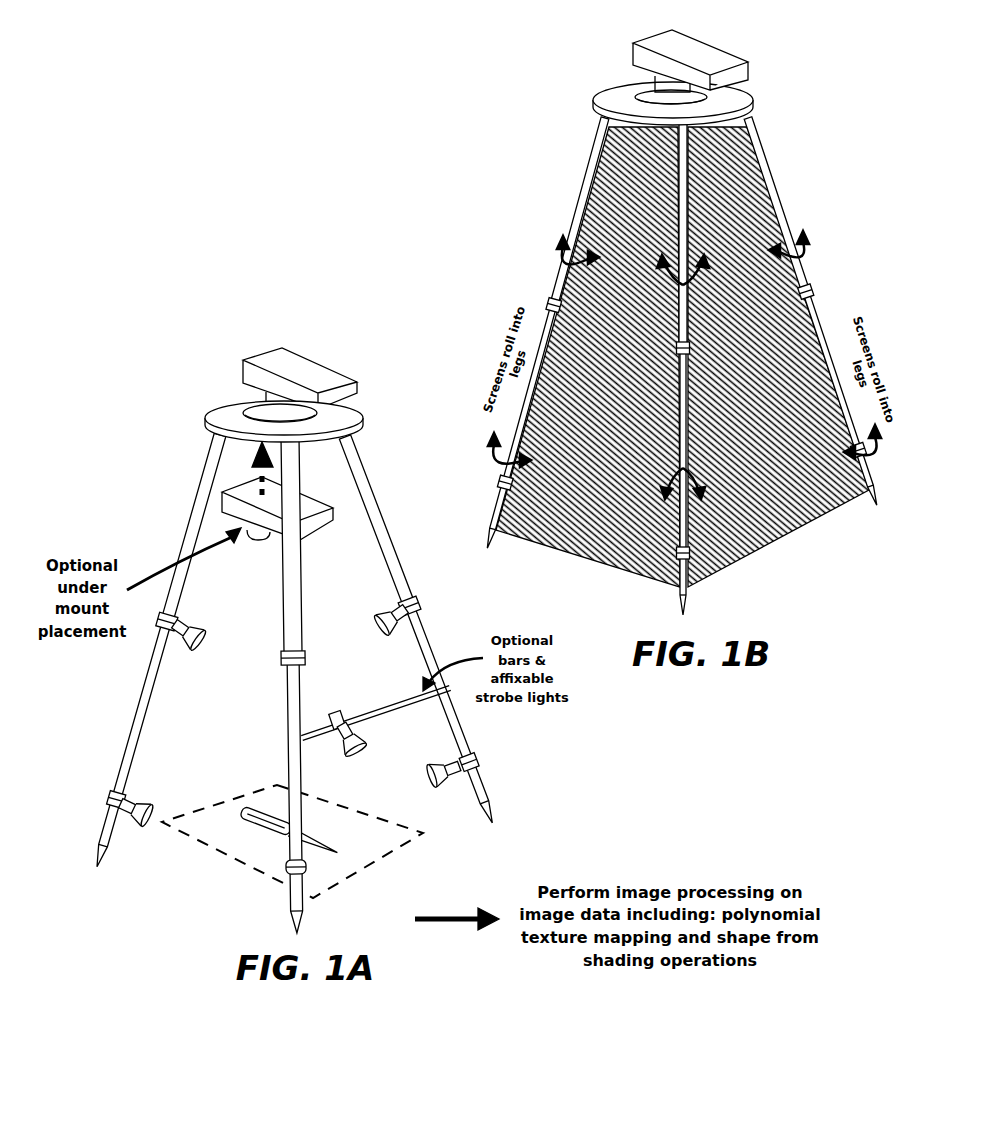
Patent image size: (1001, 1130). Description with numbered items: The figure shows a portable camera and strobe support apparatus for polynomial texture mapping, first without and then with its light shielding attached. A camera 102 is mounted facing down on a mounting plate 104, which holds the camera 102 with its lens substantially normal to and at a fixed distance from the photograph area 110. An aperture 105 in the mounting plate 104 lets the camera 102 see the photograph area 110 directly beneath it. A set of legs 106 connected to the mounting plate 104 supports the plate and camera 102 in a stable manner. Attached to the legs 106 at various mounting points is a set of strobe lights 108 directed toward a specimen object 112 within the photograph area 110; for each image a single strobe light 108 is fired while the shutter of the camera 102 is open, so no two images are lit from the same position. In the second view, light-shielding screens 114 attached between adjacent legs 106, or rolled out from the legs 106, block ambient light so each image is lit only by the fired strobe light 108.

In FIG. 1A, the camera 102 is at (267, 434).
In FIG. 1B, the camera 102 is at (718, 53).
In FIG. 1A, the mounting plate 104 is at (248, 408).
In FIG. 1B, the mounting plate 104 is at (638, 93).
In FIG. 1A, the aperture 105 is at (232, 387).
In FIG. 1B, the aperture 105 is at (622, 69).
In FIG. 1A, the legs 106 is at (294, 683).
In FIG. 1B, the legs 106 is at (681, 366).
In FIG. 1A, the strobe lights 108 is at (292, 747).
In FIG. 1B, the strobe lights 108 is at (659, 425).
In FIG. 1A, the photograph area 110 is at (306, 841).
In FIG. 1A, the specimen object 112 is at (235, 844).
In FIG. 1B, the light-shielding screens 114 is at (682, 357).